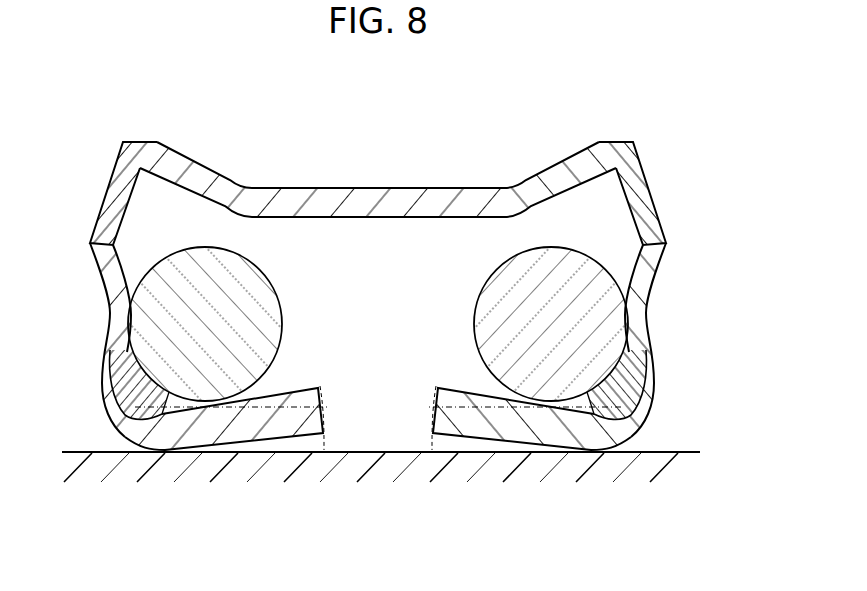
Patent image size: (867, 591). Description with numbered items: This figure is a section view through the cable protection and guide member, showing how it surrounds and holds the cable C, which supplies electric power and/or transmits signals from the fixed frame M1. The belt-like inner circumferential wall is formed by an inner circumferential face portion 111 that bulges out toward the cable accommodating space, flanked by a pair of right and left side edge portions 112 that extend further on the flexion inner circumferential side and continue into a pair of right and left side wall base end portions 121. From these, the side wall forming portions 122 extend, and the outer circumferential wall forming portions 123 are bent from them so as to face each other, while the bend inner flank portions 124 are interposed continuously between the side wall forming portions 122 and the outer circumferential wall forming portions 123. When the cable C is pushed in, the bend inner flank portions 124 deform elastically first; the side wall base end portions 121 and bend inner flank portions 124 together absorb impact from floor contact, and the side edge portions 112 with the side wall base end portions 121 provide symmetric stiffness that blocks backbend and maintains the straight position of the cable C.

The inner circumferential face portion 111 is at (503, 182).
The side edge portions 112 is at (598, 127).
The side wall base end portions 121 is at (682, 198).
The side wall forming portions 122 is at (682, 310).
The outer circumferential wall forming portions 123 is at (470, 432).
The bend inner flank portions 124 is at (682, 410).
The cable C is at (482, 327).
The fixed frame M1 is at (652, 510).